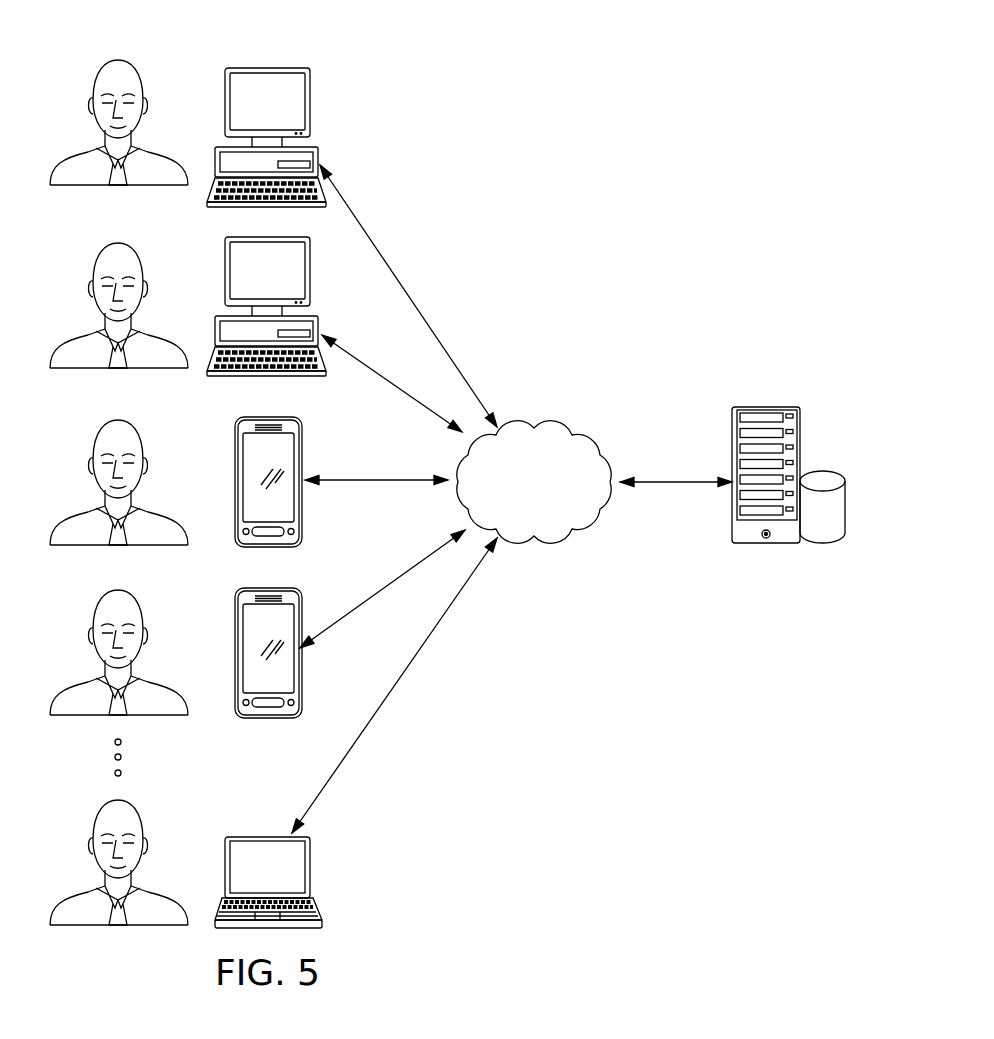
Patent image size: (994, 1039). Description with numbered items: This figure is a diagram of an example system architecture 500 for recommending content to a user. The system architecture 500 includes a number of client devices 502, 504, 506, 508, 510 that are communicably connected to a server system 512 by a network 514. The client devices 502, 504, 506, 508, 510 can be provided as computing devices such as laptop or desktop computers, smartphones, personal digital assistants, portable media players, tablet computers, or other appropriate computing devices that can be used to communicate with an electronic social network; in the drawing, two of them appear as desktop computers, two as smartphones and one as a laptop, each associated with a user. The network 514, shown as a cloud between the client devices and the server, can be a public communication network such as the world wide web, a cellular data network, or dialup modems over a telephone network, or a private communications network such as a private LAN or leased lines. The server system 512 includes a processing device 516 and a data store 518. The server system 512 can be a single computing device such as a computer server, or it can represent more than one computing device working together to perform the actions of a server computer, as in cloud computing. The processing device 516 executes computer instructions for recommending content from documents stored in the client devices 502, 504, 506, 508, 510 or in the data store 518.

The system architecture 500 is at (452, 470).
The client device 502 is at (267, 67).
The client device 504 is at (224, 274).
The client device 506 is at (235, 453).
The client device 508 is at (266, 718).
The client device 510 is at (268, 836).
The server system 512 is at (777, 492).
The network 514 is at (548, 418).
The processing device 516 is at (765, 406).
The data store 518 is at (822, 470).